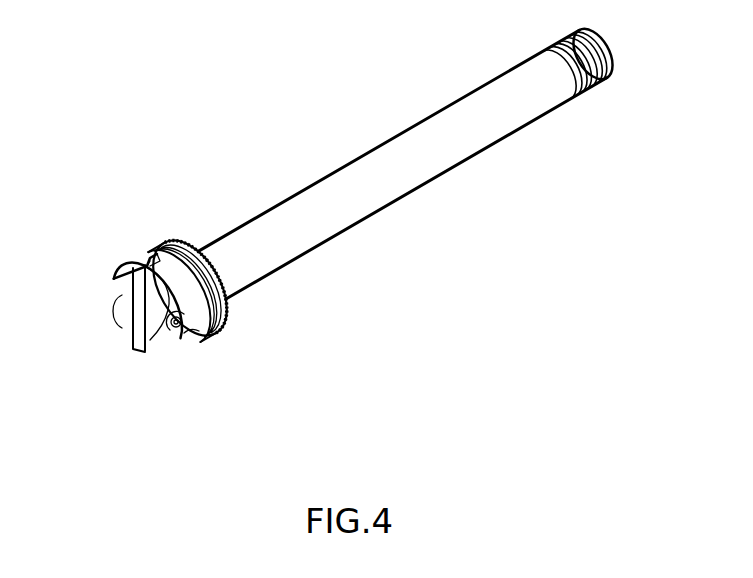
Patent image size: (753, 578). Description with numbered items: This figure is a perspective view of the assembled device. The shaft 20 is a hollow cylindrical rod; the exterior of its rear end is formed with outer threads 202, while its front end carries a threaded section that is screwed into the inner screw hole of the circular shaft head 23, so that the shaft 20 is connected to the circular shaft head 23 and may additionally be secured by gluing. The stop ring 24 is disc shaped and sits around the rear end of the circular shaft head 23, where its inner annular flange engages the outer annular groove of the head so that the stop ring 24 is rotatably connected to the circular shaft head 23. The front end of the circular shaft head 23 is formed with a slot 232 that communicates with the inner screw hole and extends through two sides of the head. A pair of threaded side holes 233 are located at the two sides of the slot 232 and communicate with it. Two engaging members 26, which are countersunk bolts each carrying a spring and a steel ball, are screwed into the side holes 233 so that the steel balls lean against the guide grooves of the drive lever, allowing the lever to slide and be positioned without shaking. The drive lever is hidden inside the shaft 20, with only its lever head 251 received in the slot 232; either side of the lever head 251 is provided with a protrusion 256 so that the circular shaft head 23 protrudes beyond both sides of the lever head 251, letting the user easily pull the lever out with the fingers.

The shaft 20 is at (395, 183).
The outer threads 202 is at (597, 82).
The circular shaft head 23 is at (120, 279).
The stop ring 24 is at (227, 297).
The engaging member 26 is at (200, 328).
The slot 232 is at (123, 333).
The side hole 233 is at (178, 333).
The lever head 251 is at (128, 315).
The protrusion 256 is at (143, 262).